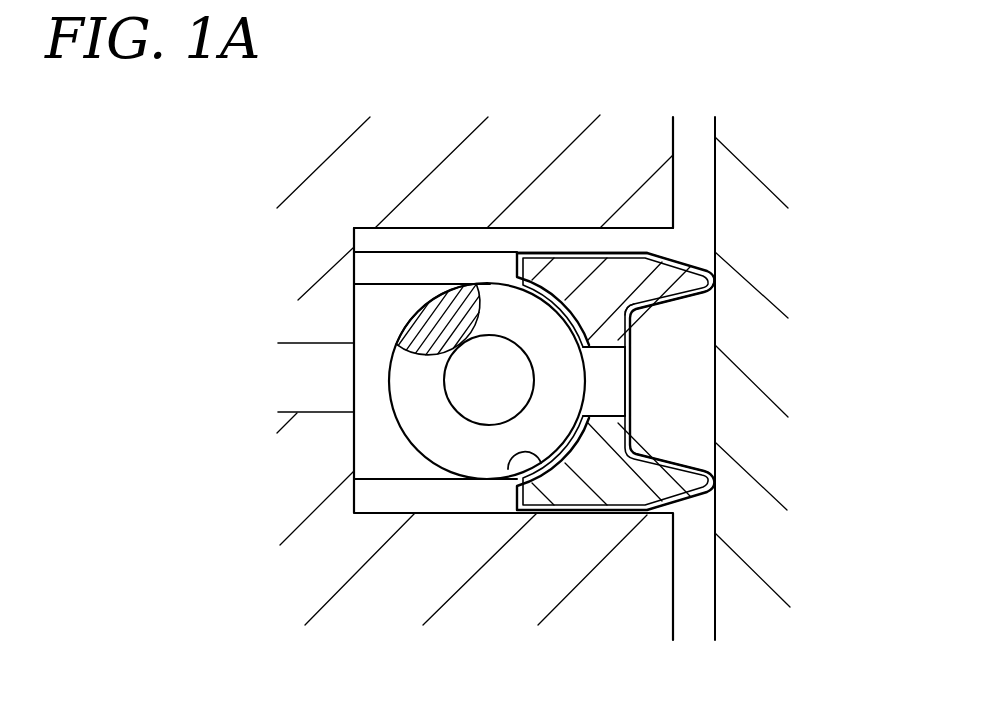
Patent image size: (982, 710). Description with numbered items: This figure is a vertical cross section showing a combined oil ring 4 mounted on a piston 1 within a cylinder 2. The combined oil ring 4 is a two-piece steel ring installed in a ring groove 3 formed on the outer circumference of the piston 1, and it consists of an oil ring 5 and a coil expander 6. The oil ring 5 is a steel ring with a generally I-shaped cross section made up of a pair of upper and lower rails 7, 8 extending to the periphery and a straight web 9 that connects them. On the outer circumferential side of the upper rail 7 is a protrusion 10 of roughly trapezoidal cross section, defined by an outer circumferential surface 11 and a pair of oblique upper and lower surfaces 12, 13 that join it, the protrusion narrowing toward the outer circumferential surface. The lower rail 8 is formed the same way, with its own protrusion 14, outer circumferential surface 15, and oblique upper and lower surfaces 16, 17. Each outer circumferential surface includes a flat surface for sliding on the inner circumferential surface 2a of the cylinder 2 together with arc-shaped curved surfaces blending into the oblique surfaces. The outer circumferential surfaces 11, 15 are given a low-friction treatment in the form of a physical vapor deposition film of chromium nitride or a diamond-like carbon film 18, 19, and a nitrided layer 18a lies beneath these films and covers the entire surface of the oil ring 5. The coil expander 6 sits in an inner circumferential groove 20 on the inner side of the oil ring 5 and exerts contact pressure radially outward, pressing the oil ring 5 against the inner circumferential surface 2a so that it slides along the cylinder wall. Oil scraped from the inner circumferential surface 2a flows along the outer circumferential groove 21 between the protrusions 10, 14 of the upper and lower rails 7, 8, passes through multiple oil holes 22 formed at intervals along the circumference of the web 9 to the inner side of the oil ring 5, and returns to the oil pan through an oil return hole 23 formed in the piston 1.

The piston 1 is at (410, 164).
The cylinder 2 is at (774, 158).
The inner circumferential surface of the cylinder 2a is at (714, 130).
The ring groove 3 is at (423, 238).
The combined oil ring 4 is at (484, 249).
The oil ring 5 is at (625, 251).
The coil expander 6 is at (455, 462).
The upper rail 7 is at (580, 267).
The lower rail 8 is at (595, 490).
The web 9 is at (633, 363).
The protrusion 10 is at (660, 256).
The outer circumferential surface 11 is at (716, 283).
The oblique upper surface 12 is at (700, 258).
The oblique lower surface 13 is at (688, 300).
The protrusion 14 is at (683, 500).
The outer circumferential surface 15 is at (717, 481).
The oblique upper surface 16 is at (680, 468).
The oblique lower surface 17 is at (703, 512).
The film 18 is at (710, 310).
The nitrided layer 18a is at (555, 250).
The film 19 is at (703, 462).
The inner circumferential groove 20 is at (508, 462).
The outer circumferential groove 21 is at (633, 325).
The oil holes 22 is at (613, 387).
The oil return hole 23 is at (325, 403).